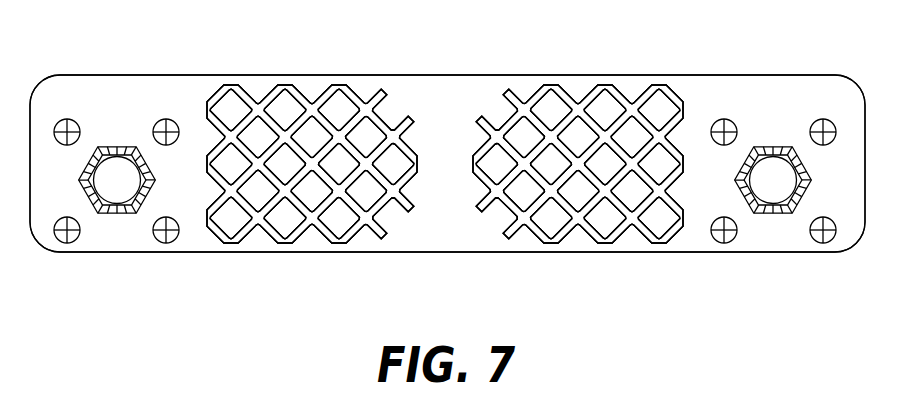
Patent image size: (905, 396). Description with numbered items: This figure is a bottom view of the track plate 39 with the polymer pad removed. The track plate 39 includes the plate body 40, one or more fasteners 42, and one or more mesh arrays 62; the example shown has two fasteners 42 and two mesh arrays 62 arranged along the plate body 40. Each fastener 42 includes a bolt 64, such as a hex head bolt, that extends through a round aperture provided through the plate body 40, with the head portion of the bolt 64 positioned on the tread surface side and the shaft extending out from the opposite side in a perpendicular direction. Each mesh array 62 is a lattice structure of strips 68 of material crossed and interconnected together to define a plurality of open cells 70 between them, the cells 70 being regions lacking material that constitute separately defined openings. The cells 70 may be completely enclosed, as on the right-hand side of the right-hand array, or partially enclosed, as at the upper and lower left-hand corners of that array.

The track plate 39 is at (825, 48).
The plate body 40 is at (457, 100).
The fastener 42 is at (118, 252).
The mesh array 62 is at (307, 78).
The bolt 64 is at (116, 173).
The strip 68 is at (388, 118).
The open cell 70 is at (346, 106).